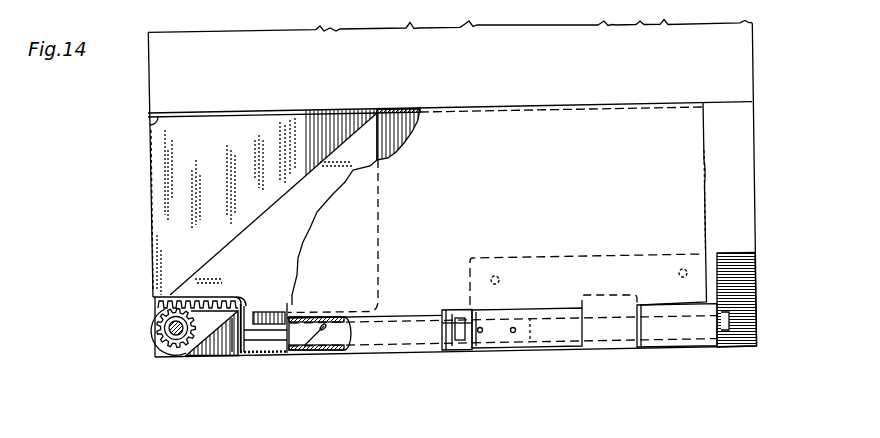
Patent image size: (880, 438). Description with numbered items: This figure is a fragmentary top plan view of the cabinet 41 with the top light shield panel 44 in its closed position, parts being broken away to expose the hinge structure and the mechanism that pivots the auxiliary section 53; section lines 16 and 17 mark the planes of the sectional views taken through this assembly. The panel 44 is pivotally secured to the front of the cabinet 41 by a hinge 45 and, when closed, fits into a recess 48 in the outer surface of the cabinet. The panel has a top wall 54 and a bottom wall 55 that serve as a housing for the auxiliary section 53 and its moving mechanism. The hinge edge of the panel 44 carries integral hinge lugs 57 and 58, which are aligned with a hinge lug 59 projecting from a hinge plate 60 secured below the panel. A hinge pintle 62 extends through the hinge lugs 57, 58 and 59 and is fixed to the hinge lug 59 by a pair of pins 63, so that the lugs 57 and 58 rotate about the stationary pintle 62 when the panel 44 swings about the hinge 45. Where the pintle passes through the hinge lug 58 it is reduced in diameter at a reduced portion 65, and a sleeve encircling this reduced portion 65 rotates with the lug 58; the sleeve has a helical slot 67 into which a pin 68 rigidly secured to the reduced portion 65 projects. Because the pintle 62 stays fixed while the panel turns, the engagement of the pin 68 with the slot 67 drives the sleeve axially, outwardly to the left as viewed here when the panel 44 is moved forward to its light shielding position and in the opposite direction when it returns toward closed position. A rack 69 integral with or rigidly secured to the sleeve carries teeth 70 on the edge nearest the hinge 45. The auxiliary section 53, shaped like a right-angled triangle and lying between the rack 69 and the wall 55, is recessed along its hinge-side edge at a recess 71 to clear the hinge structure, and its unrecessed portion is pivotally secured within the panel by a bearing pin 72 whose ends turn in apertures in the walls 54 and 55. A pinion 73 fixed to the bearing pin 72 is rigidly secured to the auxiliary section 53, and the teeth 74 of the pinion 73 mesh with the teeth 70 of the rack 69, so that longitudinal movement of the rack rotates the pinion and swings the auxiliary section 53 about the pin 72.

The section line 16- 16 is at (171, 103).
The section line 17- 17 is at (497, 226).
The cabinet 41 is at (757, 70).
The top light shield panel 44 is at (170, 210).
The hinge 45 is at (597, 286).
The recess 48 is at (148, 121).
The auxiliary section 53 is at (218, 268).
The top wall 54 is at (706, 163).
The bottom wall 55 is at (165, 170).
The hinge lug 57 is at (618, 350).
The hinge lug 58 is at (404, 353).
The hinge lug 59 is at (515, 349).
The hinge plate 60 is at (628, 268).
The hinge pintle 62 is at (757, 336).
The pins 63 is at (481, 328).
The reduced portion 65 is at (242, 348).
The helical slot 67 is at (326, 321).
The pin 68 is at (305, 350).
The rack 69 is at (243, 299).
The teeth 70 is at (196, 312).
The recess 71 is at (292, 318).
The bearing pin 72 is at (170, 333).
The pinion 73 is at (154, 330).
The teeth 74 is at (198, 320).